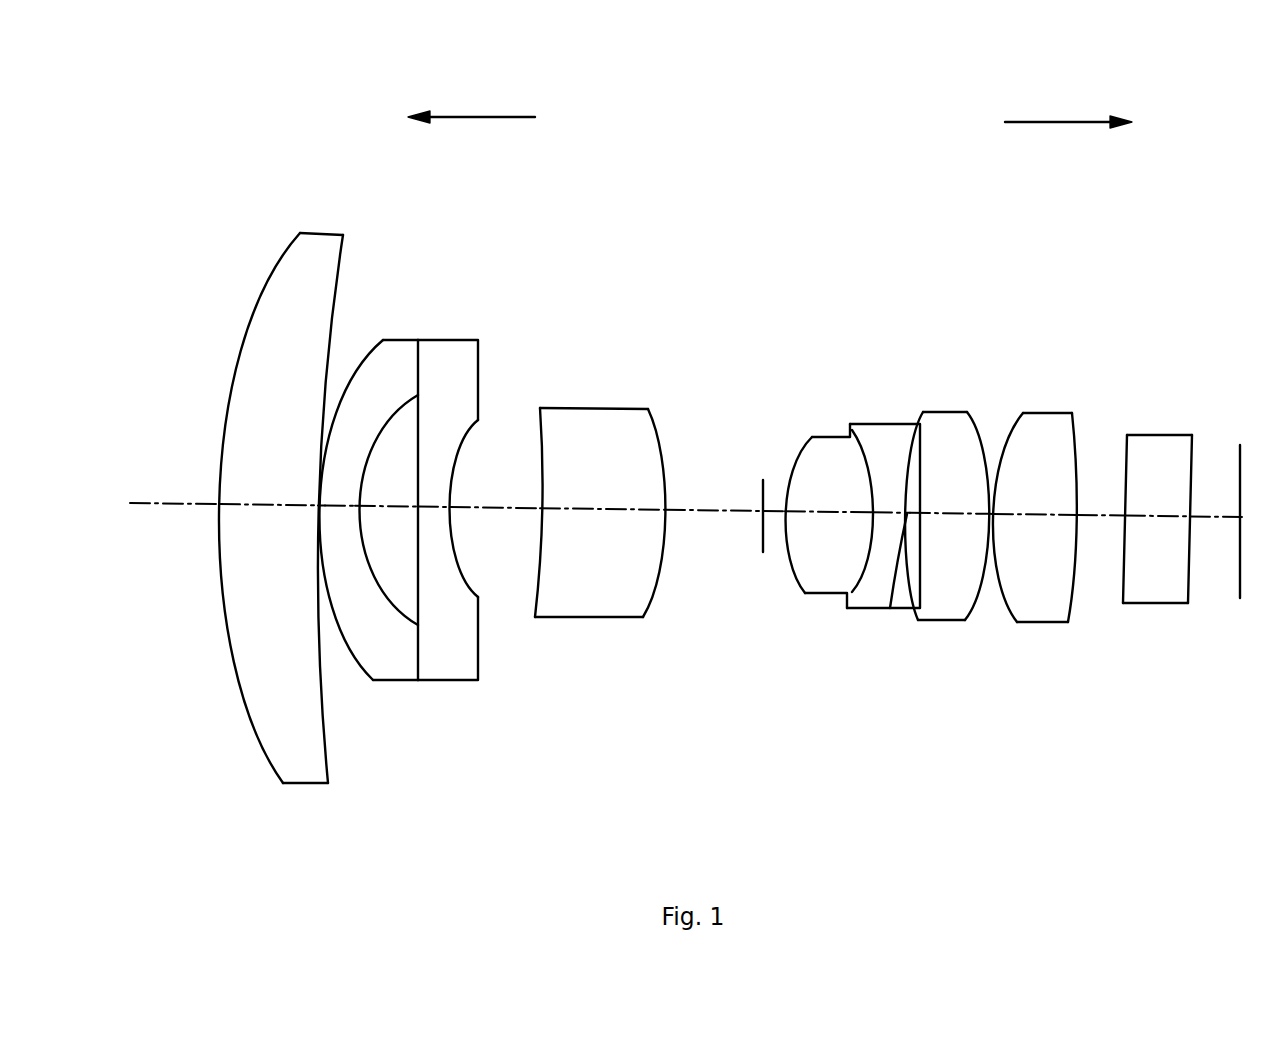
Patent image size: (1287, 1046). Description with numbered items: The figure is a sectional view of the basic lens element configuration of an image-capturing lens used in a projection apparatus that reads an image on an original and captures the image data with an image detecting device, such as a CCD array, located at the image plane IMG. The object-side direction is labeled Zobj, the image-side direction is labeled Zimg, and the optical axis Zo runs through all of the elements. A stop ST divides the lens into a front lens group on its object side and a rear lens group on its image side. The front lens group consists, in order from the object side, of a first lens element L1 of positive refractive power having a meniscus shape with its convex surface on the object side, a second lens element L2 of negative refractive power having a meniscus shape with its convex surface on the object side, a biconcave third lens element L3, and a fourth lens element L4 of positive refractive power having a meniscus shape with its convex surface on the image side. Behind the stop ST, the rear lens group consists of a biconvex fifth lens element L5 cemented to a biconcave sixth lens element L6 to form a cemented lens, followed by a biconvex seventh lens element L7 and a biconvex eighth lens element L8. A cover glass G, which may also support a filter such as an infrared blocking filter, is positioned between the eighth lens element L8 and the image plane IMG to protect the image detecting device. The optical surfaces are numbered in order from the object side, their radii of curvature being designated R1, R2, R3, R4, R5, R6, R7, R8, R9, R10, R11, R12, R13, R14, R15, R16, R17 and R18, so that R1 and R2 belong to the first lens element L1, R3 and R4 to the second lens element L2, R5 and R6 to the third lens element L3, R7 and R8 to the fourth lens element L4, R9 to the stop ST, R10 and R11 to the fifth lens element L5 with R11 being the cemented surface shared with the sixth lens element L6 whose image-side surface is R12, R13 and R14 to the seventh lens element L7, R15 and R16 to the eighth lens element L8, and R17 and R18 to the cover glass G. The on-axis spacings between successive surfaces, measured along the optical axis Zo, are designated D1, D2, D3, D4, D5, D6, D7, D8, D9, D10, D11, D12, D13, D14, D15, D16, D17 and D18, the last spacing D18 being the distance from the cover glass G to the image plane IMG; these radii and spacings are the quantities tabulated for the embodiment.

The first lens element L1 is at (289, 510).
The second lens element L2 is at (368, 524).
The third lens element L3 is at (461, 508).
The fourth lens element L4 is at (594, 516).
The fifth lens element L5 is at (820, 535).
The sixth lens element L6 is at (883, 518).
The seventh lens element L7 is at (948, 534).
The eighth lens element L8 is at (1044, 526).
The stop ST is at (744, 509).
The cover glass G is at (1160, 523).
The image plane IMG is at (1243, 460).
The object-side direction Zobj is at (483, 117).
The image-side direction Zimg is at (1058, 122).
The optical axis Zo is at (155, 509).
The radius of curvature of surface 1 R1 is at (258, 750).
The radius of curvature of surface 2 R2 is at (330, 727).
The radius of curvature of surface 3 R3 is at (350, 657).
The radius of curvature of surface 4 R4 is at (408, 635).
The radius of curvature of surface 5 R5 is at (431, 680).
The radius of curvature of surface 6 R6 is at (480, 600).
The radius of curvature of surface 7 R7 is at (537, 583).
The radius of curvature of surface 8 R8 is at (650, 583).
The radius of curvature of surface 9 R9 is at (762, 545).
The radius of curvature of surface 10 R10 is at (800, 571).
The radius of curvature of surface 11 R11 is at (851, 592).
The radius of curvature of surface 12 R12 is at (890, 608).
The radius of curvature of surface 13 R13 is at (926, 622).
The radius of curvature of surface 14 R14 is at (973, 621).
The radius of curvature of surface 15 R15 is at (1007, 598).
The radius of curvature of surface 16 R16 is at (1070, 604).
The radius of curvature of surface 17 R17 is at (1123, 586).
The radius of curvature of surface 18 R18 is at (1187, 586).
The on-axis spacing 1 D1 is at (269, 493).
The on-axis spacing 2 D2 is at (322, 503).
The on-axis spacing 3 D3 is at (339, 500).
The on-axis spacing 4 D4 is at (386, 493).
The on-axis spacing 5 D5 is at (438, 500).
The on-axis spacing 6 D6 is at (495, 493).
The on-axis spacing 7 D7 is at (602, 495).
The on-axis spacing 8 D8 is at (714, 495).
The on-axis spacing 9 D9 is at (777, 512).
The on-axis spacing 10 D10 is at (828, 498).
The on-axis spacing 11 D11 is at (890, 473).
The on-axis spacing 12 D12 is at (908, 512).
The on-axis spacing 13 D13 is at (949, 499).
The on-axis spacing 14 D14 is at (995, 516).
The on-axis spacing 15 D15 is at (1035, 499).
The on-axis spacing 16 D16 is at (1101, 504).
The on-axis spacing 17 D17 is at (1157, 504).
The on-axis spacing 18 D18 is at (1216, 504).